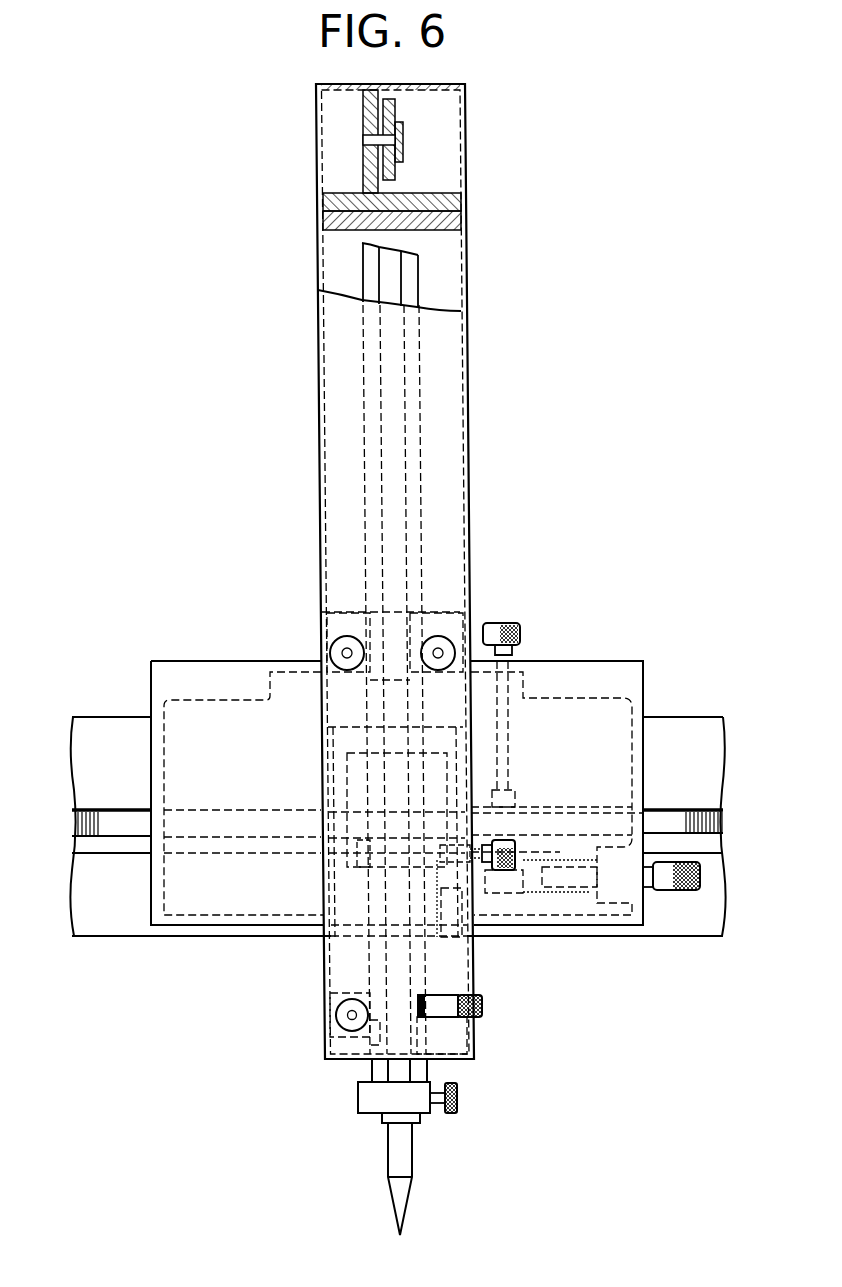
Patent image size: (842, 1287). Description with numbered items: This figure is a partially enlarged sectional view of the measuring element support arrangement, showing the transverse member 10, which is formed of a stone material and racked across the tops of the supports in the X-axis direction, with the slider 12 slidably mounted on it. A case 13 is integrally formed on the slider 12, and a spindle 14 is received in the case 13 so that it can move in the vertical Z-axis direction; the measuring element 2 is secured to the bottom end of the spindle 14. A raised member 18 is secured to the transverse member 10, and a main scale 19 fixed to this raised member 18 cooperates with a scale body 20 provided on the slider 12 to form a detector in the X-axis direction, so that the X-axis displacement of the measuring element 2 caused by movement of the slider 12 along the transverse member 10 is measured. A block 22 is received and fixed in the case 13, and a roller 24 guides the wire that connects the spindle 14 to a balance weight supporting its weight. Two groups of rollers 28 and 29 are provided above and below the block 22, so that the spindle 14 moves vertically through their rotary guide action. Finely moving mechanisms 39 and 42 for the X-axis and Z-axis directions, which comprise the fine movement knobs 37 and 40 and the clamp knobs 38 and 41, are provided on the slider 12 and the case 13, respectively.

The measuring element 2 is at (400, 1190).
The transverse member 10 is at (97, 726).
The slider 12 is at (177, 668).
The case 13 is at (467, 392).
The spindle 14 is at (410, 272).
The raised member 18 is at (80, 845).
The main scale 19 is at (103, 812).
The scale body 20 is at (370, 775).
The block 22 is at (323, 888).
The roller 24 is at (396, 110).
The group of rollers 28 is at (330, 640).
The group of rollers 29 is at (325, 1027).
The fine movement knob 37 is at (688, 892).
The clamp knob 38 is at (507, 623).
The finely moving mechanism 39 is at (540, 893).
The fine movement knob 40 is at (482, 1007).
The clamp knob 41 is at (503, 838).
The finely moving mechanism 42 is at (475, 893).